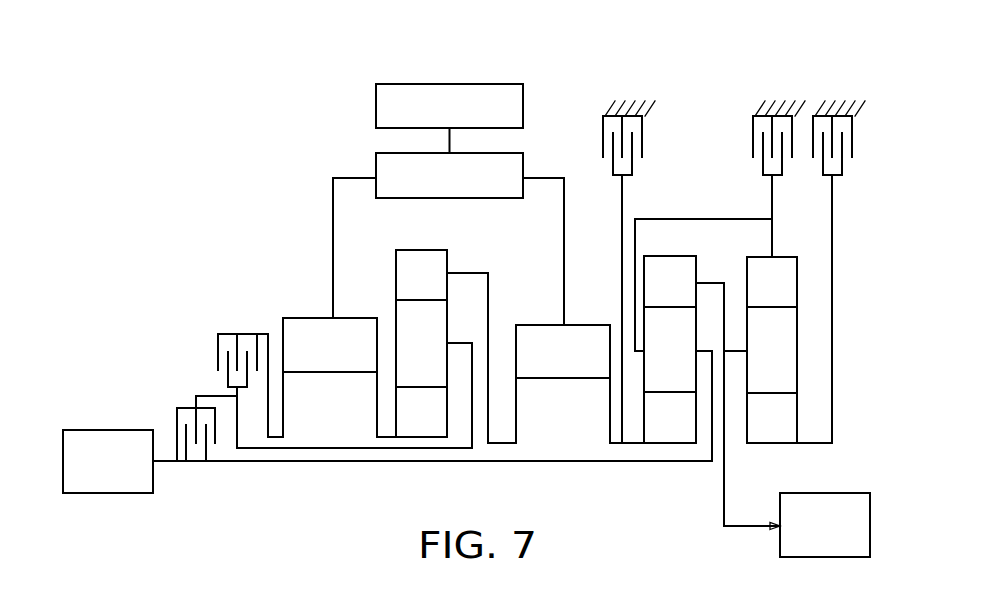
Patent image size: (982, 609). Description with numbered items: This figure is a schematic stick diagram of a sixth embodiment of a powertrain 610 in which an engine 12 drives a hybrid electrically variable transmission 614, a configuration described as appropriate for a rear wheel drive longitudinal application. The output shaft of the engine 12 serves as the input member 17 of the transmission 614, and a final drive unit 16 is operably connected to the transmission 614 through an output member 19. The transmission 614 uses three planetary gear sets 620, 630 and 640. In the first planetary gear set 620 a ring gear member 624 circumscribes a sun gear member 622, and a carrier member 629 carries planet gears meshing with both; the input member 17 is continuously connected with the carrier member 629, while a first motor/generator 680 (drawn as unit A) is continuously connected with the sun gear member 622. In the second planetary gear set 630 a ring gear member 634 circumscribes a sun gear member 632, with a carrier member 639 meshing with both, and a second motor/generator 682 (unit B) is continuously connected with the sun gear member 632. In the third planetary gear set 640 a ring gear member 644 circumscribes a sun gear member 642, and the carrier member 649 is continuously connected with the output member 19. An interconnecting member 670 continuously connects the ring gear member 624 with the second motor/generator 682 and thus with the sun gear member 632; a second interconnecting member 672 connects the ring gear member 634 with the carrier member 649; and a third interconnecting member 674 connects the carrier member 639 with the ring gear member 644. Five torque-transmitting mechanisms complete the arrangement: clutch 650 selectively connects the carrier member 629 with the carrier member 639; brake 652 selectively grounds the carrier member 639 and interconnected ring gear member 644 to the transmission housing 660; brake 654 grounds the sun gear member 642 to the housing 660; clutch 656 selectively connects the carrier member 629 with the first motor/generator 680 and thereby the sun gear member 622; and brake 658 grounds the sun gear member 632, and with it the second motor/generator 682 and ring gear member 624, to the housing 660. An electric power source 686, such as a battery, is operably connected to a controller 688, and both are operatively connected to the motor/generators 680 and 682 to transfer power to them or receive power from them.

The engine 12 is at (115, 413).
The input member 17 is at (168, 463).
The final drive unit 16 is at (822, 570).
The output member 19 is at (746, 527).
The powertrain 610 is at (535, 68).
The transmission 614 is at (695, 68).
The first planetary gear set 620 is at (396, 384).
The sun gear member 622 is at (421, 412).
The ring gear member 624 is at (437, 287).
The carrier member 629 is at (437, 356).
The second planetary gear set 630 is at (649, 387).
The sun gear member 632 is at (670, 417).
The ring gear member 634 is at (686, 293).
The carrier member 639 is at (686, 366).
The third planetary gear set 640 is at (793, 374).
The sun gear member 642 is at (788, 428).
The ring gear member 644 is at (788, 293).
The carrier member 649 is at (788, 365).
The first torque-transmitting mechanism 650 is at (203, 480).
The second torque-transmitting mechanism 652 is at (743, 140).
The torque-transmitting mechanism 654 is at (810, 163).
The fourth torque-transmitting mechanism 656 is at (205, 353).
The fifth torque-transmitting mechanism 658 is at (597, 170).
The transmission housing 660 is at (645, 100).
The interconnecting member 670 is at (483, 272).
The second interconnecting member 672 is at (713, 278).
The third interconnecting member 674 is at (673, 217).
The first motor/generator 680 is at (353, 317).
The second motor/generator 682 is at (583, 323).
The electric power source 686 is at (376, 100).
The controller 688 is at (376, 160).